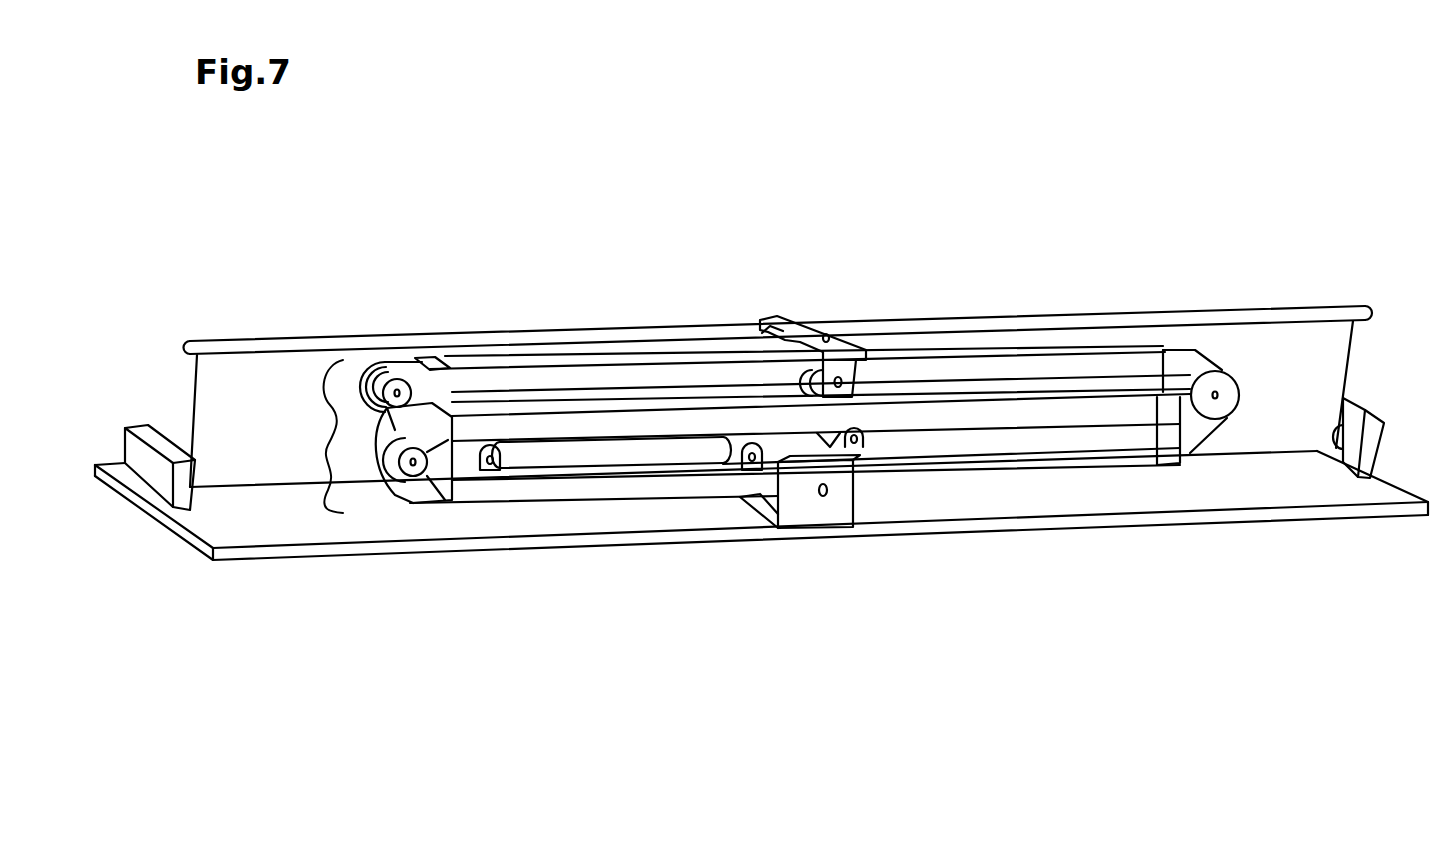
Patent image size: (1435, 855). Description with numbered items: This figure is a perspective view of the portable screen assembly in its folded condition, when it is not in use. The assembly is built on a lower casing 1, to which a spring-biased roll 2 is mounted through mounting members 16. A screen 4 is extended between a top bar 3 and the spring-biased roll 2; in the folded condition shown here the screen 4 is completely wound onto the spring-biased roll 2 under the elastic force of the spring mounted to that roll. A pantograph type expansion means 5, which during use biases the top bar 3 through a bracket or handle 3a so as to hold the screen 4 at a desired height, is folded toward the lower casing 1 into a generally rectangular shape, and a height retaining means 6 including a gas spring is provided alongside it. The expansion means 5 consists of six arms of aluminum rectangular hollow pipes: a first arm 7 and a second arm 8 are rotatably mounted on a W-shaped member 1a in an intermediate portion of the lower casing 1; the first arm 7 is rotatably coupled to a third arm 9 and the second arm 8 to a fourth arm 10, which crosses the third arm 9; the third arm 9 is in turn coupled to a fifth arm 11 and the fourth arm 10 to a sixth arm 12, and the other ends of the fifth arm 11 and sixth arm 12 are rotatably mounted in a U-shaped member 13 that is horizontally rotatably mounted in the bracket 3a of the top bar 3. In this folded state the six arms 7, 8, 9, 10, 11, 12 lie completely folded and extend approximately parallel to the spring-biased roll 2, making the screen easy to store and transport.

The lower casing 1 is at (1322, 510).
The W-shaped member 1a is at (837, 508).
The spring-biased roll 2 is at (1358, 420).
The top bar 3 is at (1047, 318).
The bracket 3a is at (808, 326).
The screen 4 is at (1325, 356).
The pantograph type expansion means 5 is at (313, 442).
The height retaining means 6 is at (557, 453).
The first arm 7 is at (463, 493).
The second arm 8 is at (928, 457).
The third arm 9 is at (688, 422).
The fourth arm 10 is at (1055, 415).
The fifth arm 11 is at (1128, 377).
The sixth arm 12 is at (465, 380).
The U-shaped member 13 is at (866, 378).
The mounting members 16 is at (1375, 460).